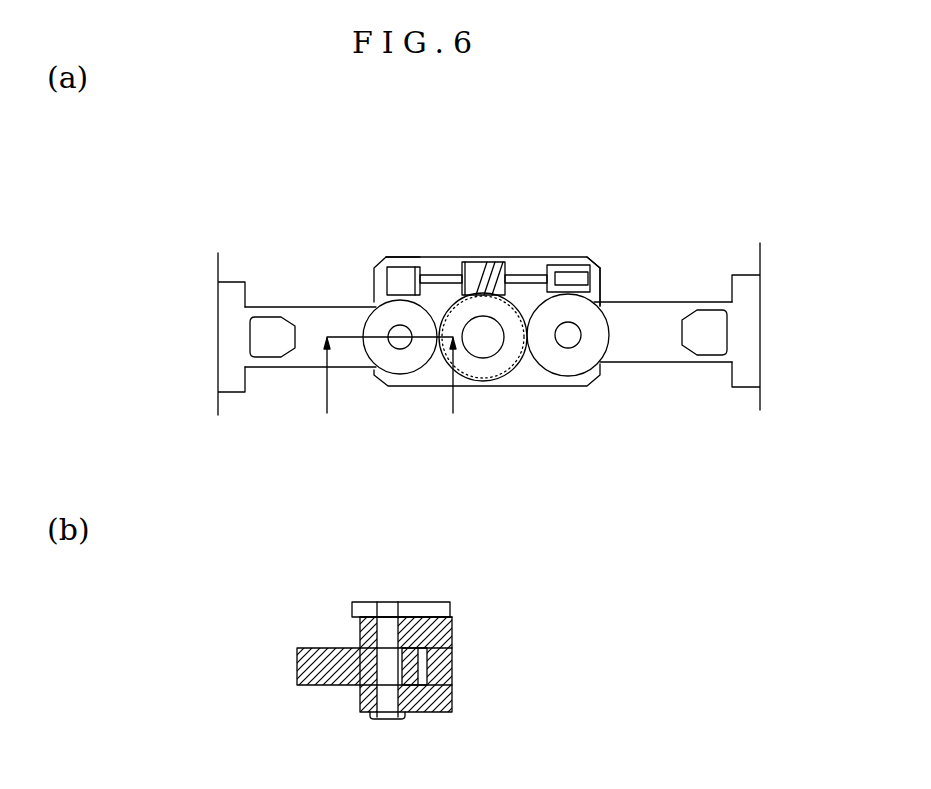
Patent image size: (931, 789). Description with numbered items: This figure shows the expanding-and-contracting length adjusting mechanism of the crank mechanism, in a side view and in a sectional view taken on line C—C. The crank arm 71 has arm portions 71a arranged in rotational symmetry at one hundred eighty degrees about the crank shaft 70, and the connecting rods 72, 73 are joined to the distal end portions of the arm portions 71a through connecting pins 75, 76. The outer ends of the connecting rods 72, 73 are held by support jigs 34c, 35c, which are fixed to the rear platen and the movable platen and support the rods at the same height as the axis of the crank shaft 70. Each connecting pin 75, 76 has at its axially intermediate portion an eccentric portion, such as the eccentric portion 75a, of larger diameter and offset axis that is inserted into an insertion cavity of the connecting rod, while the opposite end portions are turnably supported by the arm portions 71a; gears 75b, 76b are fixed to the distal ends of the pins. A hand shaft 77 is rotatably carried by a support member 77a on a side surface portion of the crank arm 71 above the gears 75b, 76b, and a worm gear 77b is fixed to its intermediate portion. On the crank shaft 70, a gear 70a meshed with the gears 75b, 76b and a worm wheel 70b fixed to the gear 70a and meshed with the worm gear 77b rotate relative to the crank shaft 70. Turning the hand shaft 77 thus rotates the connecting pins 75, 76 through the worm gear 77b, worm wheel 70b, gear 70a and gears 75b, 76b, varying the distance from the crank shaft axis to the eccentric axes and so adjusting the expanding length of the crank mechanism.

The support jig 34c is at (750, 273).
The support jig 35c is at (226, 278).
The crank shaft 70 is at (482, 360).
The gear 70a is at (662, 235).
The worm wheel 70b is at (523, 362).
The crank arm 71 is at (370, 267).
The arm portion 71a is at (443, 617).
The connecting rod 72 is at (305, 302).
The connecting rod 73 is at (672, 302).
The connecting pin 75 is at (398, 352).
The eccentric portion 75a is at (393, 663).
The gear 75b is at (400, 257).
The connecting pin 76 is at (572, 348).
The gear 76b is at (583, 318).
The hand shaft 77 is at (530, 268).
The support member 77a is at (384, 258).
The worm gear 77b is at (470, 256).
The section line C is at (389, 394).